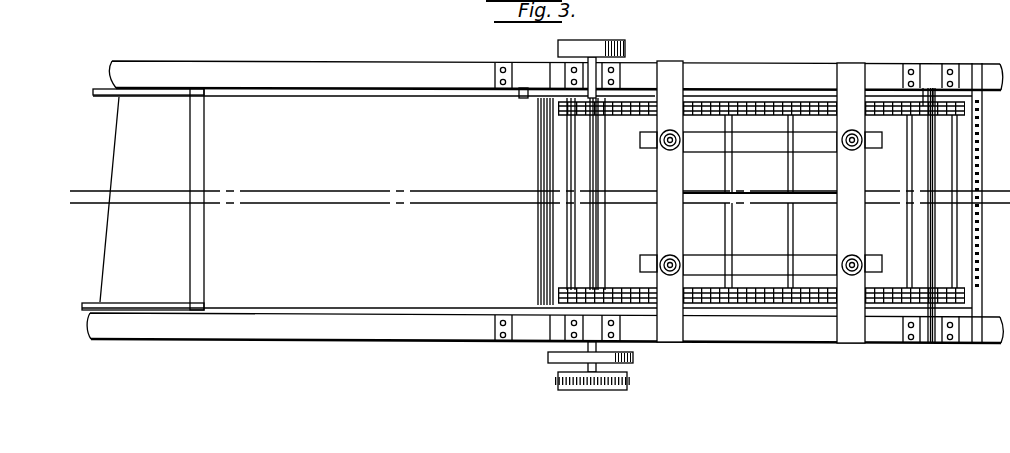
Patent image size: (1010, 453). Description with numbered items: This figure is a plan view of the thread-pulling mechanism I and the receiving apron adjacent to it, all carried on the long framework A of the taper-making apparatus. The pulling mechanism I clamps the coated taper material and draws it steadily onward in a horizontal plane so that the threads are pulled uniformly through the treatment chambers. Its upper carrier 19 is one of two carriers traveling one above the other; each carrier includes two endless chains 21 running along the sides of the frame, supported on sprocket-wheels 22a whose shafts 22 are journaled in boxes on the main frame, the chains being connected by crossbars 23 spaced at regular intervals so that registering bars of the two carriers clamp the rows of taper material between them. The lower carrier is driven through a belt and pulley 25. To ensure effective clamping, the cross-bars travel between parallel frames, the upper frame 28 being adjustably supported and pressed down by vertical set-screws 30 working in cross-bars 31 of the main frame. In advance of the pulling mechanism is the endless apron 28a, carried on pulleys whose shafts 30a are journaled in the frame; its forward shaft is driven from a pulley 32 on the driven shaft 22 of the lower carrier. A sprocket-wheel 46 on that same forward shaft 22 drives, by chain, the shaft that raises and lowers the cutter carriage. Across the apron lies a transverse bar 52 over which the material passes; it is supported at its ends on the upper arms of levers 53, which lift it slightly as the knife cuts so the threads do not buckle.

The levers 53 is at (166, 88).
The transverse bar 52 is at (204, 128).
The endless apron 28a is at (365, 105).
The shafts 30a is at (522, 93).
The pulley 25 is at (598, 92).
The shafts 22 is at (928, 228).
The framework A is at (696, 191).
The pulling mechanism I is at (838, 190).
The sprocket-wheels 22a is at (942, 367).
The carrier 19 is at (570, 178).
The vertical set-screws 30 is at (670, 150).
The frame 28 is at (760, 205).
The endless chains 21 is at (753, 117).
The cross-bars 31 is at (742, 172).
The crossbars 23 is at (788, 172).
The pulley 32 is at (636, 356).
The sprocket-wheel 46 is at (630, 380).